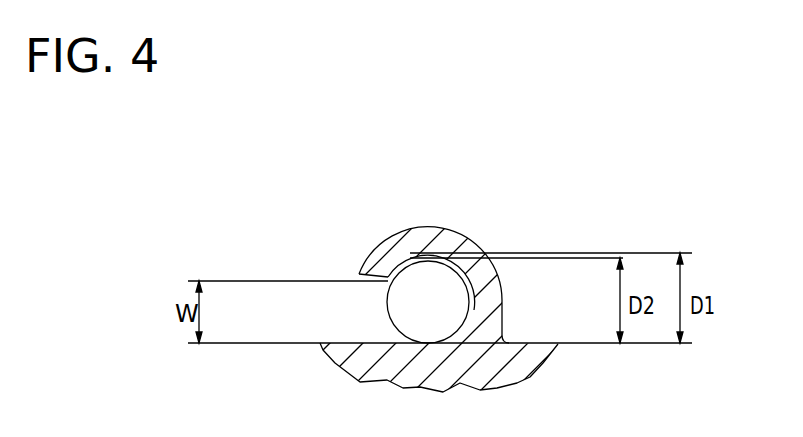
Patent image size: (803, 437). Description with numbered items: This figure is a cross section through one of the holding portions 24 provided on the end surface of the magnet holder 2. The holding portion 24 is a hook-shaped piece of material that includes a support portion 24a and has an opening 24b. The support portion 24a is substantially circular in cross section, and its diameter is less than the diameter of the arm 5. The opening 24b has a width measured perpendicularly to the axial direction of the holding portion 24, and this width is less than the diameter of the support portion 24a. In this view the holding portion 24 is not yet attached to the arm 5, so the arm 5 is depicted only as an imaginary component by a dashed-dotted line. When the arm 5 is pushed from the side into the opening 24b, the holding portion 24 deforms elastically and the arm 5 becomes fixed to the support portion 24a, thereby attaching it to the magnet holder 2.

The magnet holder 2 is at (335, 342).
The arm 5 is at (385, 311).
The holding portion 24 is at (462, 233).
The support portion 24a is at (388, 276).
The opening 24b is at (376, 302).